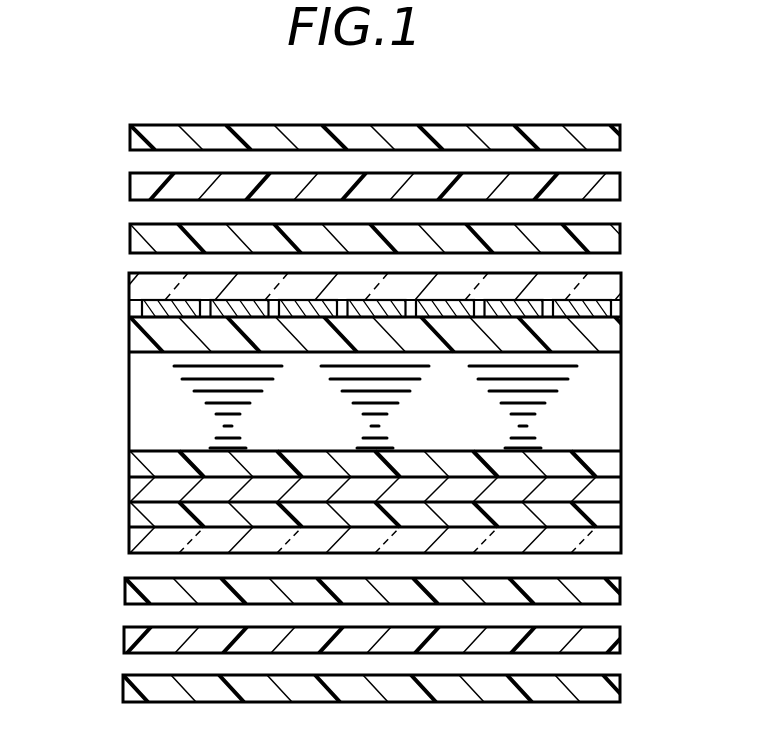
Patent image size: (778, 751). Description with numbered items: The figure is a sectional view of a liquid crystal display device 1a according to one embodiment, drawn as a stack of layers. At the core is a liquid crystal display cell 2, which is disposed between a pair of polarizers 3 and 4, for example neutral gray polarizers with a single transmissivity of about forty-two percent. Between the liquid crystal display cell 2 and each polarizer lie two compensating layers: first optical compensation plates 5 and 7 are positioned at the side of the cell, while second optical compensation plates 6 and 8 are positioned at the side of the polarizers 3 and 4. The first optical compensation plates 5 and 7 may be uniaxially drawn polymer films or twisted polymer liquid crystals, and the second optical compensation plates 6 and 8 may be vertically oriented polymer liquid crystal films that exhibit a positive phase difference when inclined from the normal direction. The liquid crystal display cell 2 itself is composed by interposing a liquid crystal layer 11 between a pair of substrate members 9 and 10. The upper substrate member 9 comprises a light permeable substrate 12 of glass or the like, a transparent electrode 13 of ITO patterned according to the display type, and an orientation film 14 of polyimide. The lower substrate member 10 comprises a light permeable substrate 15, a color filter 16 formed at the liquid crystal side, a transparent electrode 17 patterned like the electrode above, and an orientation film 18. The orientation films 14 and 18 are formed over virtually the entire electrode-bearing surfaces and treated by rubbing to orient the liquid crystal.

The liquid crystal display device 1a is at (98, 156).
The liquid crystal display cell 2 is at (445, 421).
The polarizer 3 is at (622, 136).
The polarizer 4 is at (622, 688).
The first optical compensation plate 5 is at (612, 244).
The second optical compensation plate 6 is at (612, 187).
The first optical compensation plate 7 is at (622, 589).
The second optical compensation plate 8 is at (612, 638).
The substrate member 9 is at (420, 318).
The substrate member 10 is at (426, 509).
The liquid crystal layer 11 is at (605, 392).
The light permeable substrate 12 is at (622, 291).
The transparent electrode 13 is at (608, 309).
The orientation film 14 is at (405, 340).
The light permeable substrate 15 is at (406, 548).
The color filter 16 is at (612, 512).
The transparent electrode 17 is at (612, 486).
The orientation film 18 is at (612, 467).